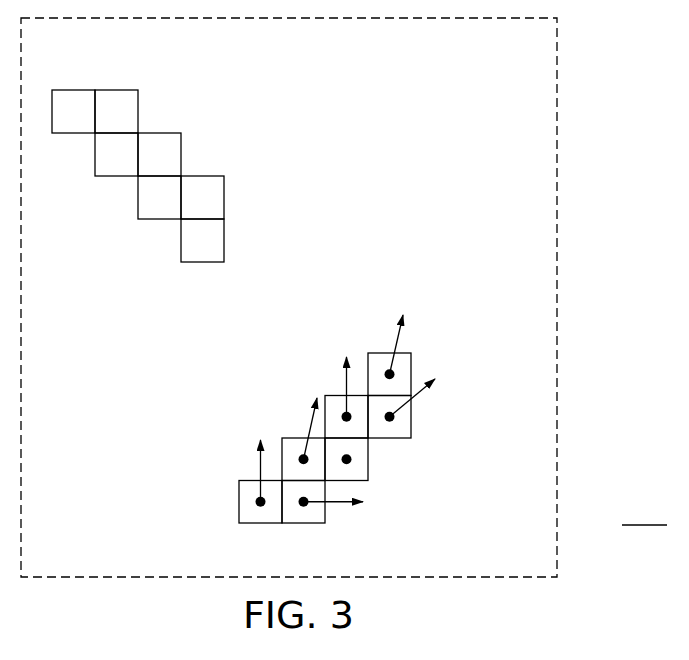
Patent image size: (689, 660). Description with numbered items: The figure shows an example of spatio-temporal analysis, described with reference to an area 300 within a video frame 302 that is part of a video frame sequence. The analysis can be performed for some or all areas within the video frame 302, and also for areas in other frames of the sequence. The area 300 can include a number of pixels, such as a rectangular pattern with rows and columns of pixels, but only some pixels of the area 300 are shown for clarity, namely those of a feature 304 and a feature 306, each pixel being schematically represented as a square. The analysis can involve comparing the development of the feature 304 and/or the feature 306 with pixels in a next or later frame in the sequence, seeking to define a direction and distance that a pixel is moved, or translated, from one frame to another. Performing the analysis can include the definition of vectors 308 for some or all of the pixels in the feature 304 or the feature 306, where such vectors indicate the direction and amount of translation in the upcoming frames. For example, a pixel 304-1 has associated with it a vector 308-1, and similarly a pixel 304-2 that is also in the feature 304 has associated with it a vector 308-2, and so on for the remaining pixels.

The area 300 is at (557, 280).
The video frame 302 is at (644, 511).
The feature 304 is at (381, 448).
The pixel 304-1 is at (412, 362).
The pixel 304-2 is at (393, 440).
The feature 306 is at (217, 88).
The vectors 308 is at (354, 408).
The vector 308-1 is at (393, 343).
The vector 308-2 is at (420, 397).